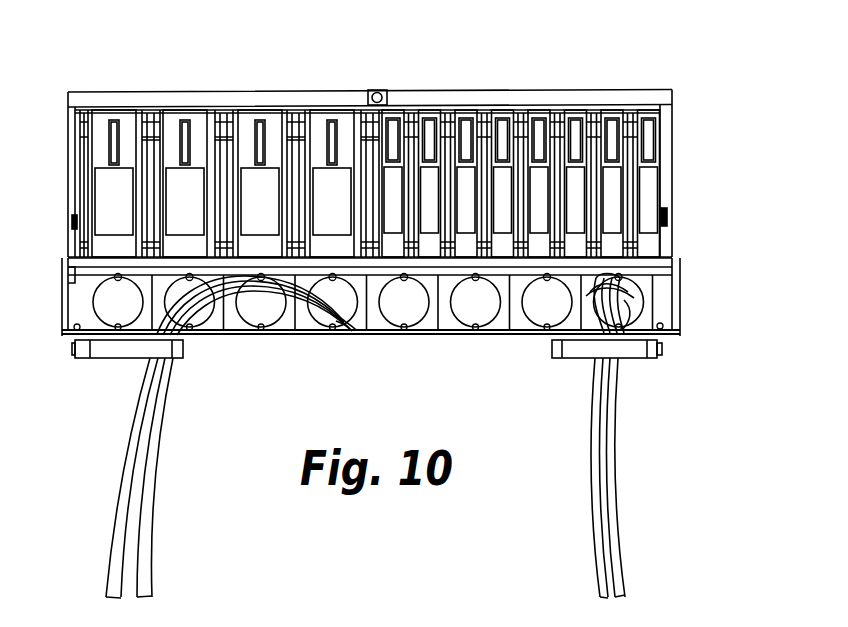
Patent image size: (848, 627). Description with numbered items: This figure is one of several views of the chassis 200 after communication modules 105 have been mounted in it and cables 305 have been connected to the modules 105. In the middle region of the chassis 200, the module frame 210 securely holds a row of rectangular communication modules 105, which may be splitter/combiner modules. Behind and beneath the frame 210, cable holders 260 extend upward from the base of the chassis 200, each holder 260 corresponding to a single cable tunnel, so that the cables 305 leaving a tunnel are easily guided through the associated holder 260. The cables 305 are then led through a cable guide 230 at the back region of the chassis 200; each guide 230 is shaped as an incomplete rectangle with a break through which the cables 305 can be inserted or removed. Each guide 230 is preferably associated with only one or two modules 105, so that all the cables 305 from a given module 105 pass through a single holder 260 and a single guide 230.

The communication module 105 is at (318, 125).
The chassis 200 is at (714, 265).
The module frame 210 is at (620, 88).
The cable guide 230 is at (115, 348).
The cable holder 260 is at (645, 302).
The cable 305 is at (140, 520).